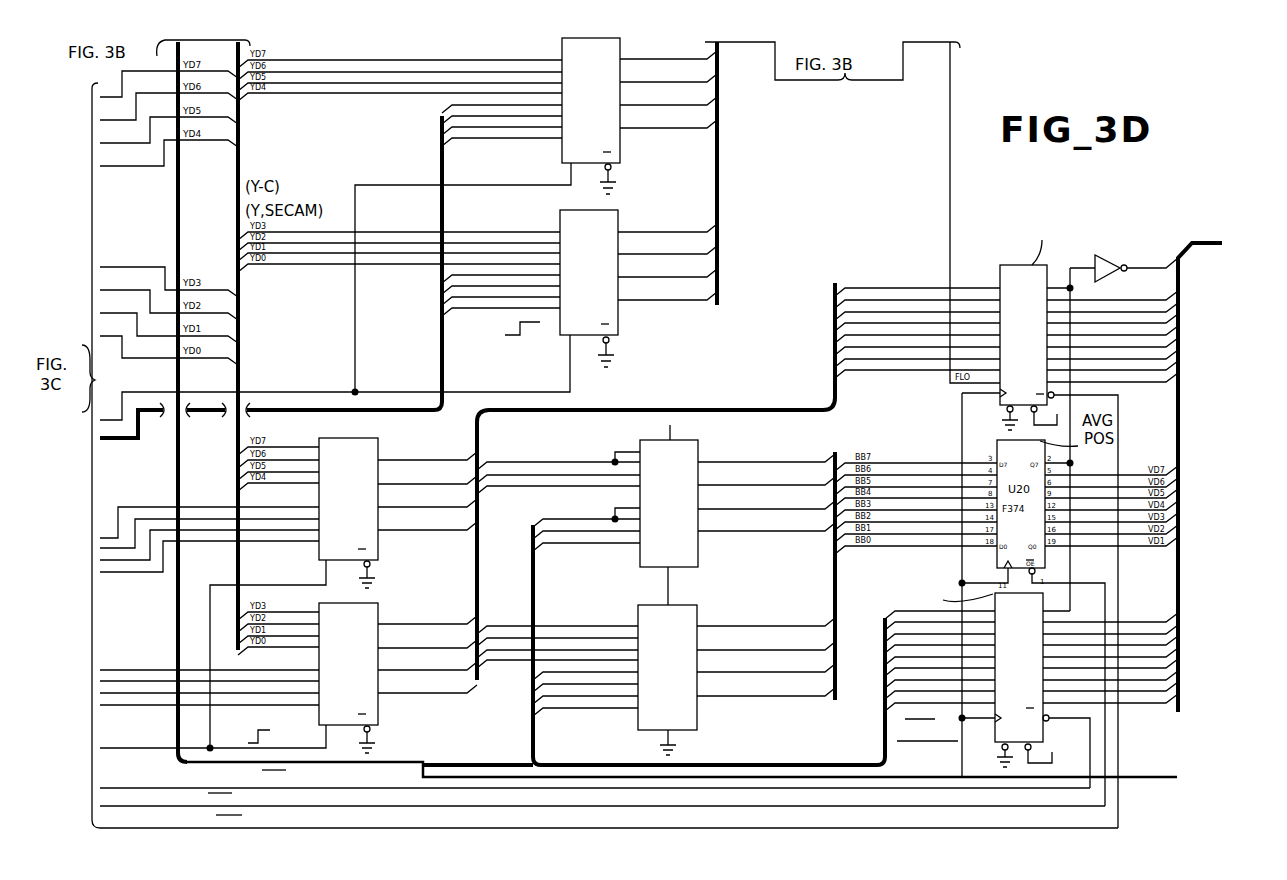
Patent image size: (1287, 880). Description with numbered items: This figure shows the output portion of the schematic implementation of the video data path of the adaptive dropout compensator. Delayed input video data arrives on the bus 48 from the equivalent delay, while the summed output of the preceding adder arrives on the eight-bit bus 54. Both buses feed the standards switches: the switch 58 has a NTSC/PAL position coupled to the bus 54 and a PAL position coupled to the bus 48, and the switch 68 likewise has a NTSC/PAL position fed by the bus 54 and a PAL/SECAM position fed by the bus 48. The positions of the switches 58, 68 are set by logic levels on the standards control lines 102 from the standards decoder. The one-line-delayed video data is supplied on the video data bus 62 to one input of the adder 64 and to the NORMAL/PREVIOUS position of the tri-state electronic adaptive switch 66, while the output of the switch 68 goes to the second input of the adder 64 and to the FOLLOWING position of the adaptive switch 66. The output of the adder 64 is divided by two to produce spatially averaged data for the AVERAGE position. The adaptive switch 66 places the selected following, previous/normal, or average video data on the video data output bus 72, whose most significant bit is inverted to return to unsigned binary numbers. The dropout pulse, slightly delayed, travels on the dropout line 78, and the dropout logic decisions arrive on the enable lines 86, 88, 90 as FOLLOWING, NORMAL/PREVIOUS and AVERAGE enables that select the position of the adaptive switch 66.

The bus 48 is at (118, 442).
The 8-bit bus 54 is at (240, 168).
The switch 58 is at (580, 165).
The video data bus 62 is at (178, 190).
The adder 64 is at (698, 566).
The tri-state electronic adaptive switch 66 is at (1003, 407).
The switch 68 is at (352, 603).
The video data output bus 72 is at (1214, 443).
The dropout line 78 is at (153, 759).
The enable line 86 is at (158, 828).
The enable line 88 is at (158, 787).
The enable line 90 is at (158, 806).
The standards control lines 102 is at (104, 418).